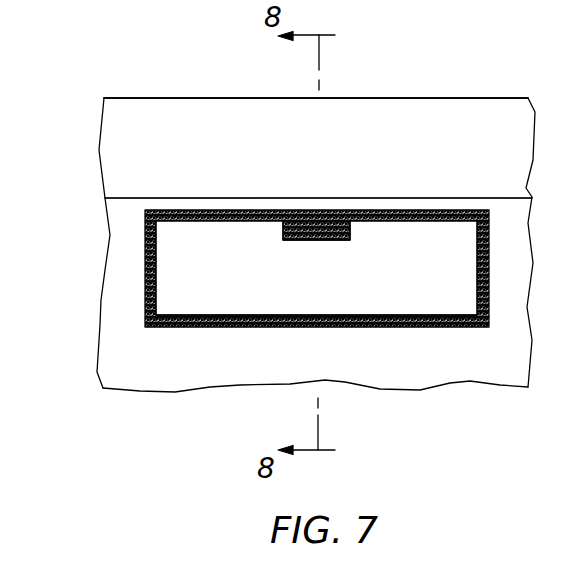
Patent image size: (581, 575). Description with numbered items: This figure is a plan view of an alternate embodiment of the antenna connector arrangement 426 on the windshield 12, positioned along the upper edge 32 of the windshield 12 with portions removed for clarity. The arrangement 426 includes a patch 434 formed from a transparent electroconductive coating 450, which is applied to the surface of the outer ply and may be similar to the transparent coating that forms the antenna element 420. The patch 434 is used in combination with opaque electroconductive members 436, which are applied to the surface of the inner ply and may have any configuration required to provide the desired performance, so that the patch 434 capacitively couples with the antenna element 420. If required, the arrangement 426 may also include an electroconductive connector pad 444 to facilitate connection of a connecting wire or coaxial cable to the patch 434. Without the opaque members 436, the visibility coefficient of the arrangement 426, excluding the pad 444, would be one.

The windshield 12 is at (99, 152).
The upper edge 32 is at (152, 97).
The antenna element 420 is at (120, 198).
The antenna connector arrangement 426 is at (402, 129).
The patch 434 is at (145, 280).
The opaque electroconductive members 436 is at (477, 285).
The electroconductive connector pad 444 is at (317, 210).
The transparent electroconductive coating 450 is at (201, 290).